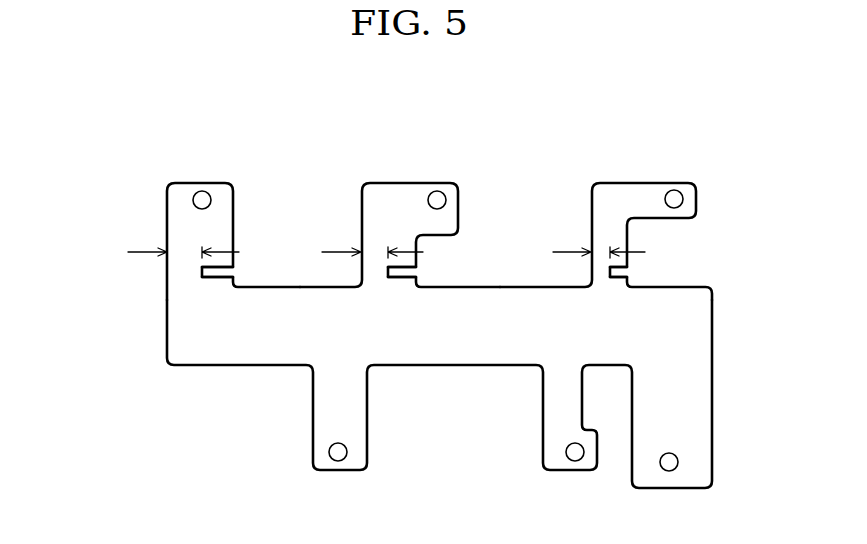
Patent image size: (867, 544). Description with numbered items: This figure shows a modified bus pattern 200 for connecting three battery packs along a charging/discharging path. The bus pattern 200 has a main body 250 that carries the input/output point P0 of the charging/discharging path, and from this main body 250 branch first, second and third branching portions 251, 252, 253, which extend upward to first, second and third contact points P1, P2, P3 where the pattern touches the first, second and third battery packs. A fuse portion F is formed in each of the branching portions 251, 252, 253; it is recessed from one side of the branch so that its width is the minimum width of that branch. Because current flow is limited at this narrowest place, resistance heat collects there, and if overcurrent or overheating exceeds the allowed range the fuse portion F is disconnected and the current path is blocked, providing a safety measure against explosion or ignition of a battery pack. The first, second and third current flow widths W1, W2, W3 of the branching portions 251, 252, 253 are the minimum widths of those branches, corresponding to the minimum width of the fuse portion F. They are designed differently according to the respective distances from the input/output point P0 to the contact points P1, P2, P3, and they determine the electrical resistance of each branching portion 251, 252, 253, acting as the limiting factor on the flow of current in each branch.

The bus pattern 200 is at (137, 322).
The lead frame plate 250 is at (700, 332).
The first branching portion 251 is at (600, 190).
The second branching portion 252 is at (370, 190).
The third branching portion 253 is at (176, 190).
The input/output point P0 is at (672, 471).
The first contact point P1 is at (676, 191).
The second contact point P2 is at (439, 191).
The third contact point P3 is at (205, 191).
The first current flow width W1 is at (591, 242).
The second current flow width W2 is at (365, 242).
The third current flow width W3 is at (177, 242).
The fuse portion F is at (232, 271).